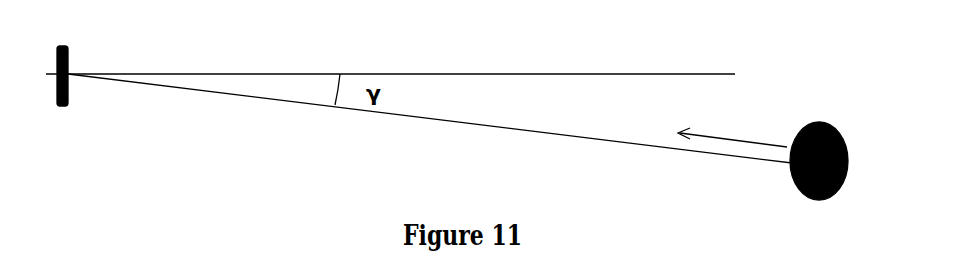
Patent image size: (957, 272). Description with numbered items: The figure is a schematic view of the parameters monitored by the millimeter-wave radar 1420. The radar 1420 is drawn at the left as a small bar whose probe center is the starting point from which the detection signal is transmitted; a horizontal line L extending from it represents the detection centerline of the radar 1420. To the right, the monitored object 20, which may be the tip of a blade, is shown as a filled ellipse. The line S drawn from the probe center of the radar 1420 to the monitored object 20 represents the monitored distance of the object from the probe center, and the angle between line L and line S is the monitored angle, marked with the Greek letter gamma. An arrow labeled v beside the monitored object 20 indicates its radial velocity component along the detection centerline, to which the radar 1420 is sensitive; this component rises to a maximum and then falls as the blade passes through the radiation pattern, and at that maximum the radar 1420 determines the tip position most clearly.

The millimeter-wave radar 1420 is at (68, 47).
The monitored object 20 is at (822, 122).
The reference line L is at (399, 78).
The monitored distance S is at (426, 118).
The radial velocity component v is at (732, 128).